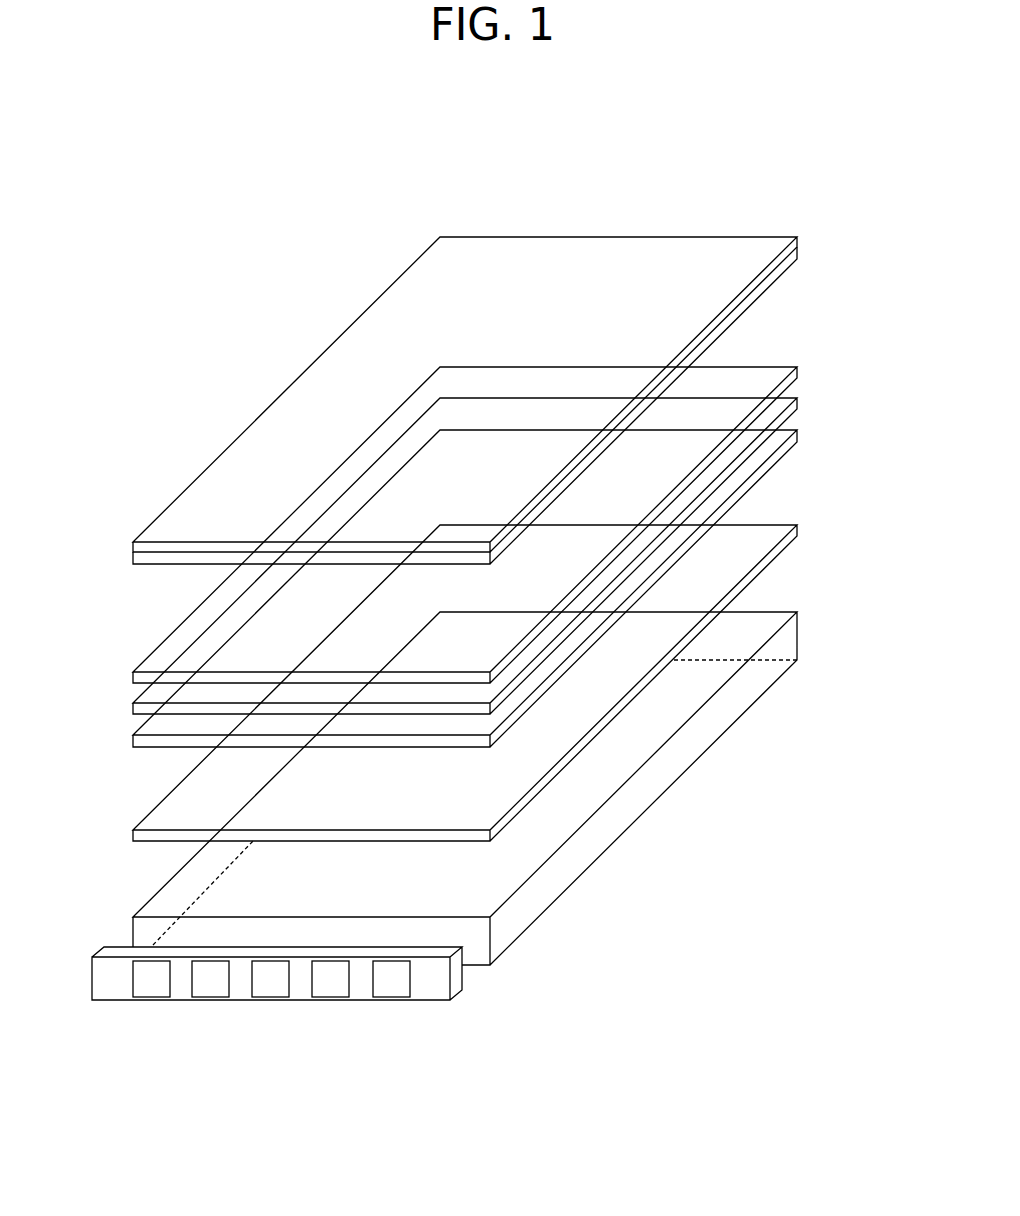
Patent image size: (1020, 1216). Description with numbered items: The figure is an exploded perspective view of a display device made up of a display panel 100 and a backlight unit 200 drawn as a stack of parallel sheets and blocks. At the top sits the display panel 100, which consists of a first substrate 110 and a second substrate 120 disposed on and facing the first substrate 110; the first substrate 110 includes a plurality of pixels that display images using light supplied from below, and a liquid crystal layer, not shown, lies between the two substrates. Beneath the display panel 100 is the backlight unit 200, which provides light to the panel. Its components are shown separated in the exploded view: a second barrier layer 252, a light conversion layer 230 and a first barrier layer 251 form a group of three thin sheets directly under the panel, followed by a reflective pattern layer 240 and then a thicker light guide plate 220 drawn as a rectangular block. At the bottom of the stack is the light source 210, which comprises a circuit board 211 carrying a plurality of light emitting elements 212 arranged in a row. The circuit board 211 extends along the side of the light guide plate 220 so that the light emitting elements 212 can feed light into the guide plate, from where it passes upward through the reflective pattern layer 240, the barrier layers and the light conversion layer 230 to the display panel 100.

The display panel 100 is at (522, 398).
The first substrate 110 is at (800, 258).
The second substrate 120 is at (800, 240).
The backlight unit 200 is at (447, 728).
The light source 210 is at (277, 1020).
The circuit board 211 is at (433, 988).
The light emitting elements 212 is at (271, 1010).
The light guide plate 220 is at (790, 638).
The light conversion layer 230 is at (800, 402).
The reflective pattern layer 240 is at (800, 529).
The first barrier layer 251 is at (800, 434).
The second barrier layer 252 is at (800, 371).